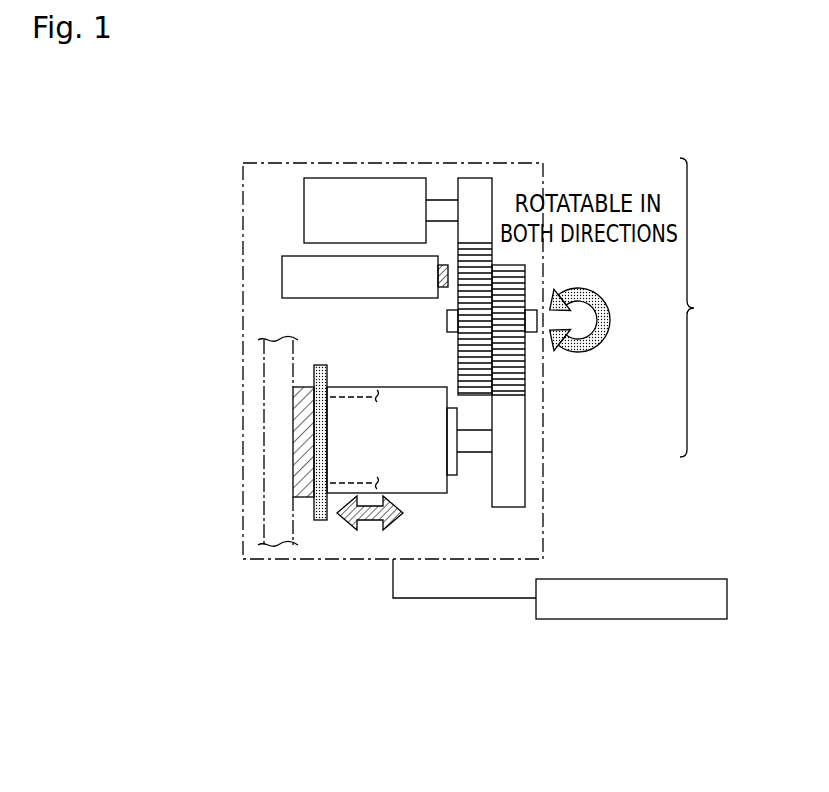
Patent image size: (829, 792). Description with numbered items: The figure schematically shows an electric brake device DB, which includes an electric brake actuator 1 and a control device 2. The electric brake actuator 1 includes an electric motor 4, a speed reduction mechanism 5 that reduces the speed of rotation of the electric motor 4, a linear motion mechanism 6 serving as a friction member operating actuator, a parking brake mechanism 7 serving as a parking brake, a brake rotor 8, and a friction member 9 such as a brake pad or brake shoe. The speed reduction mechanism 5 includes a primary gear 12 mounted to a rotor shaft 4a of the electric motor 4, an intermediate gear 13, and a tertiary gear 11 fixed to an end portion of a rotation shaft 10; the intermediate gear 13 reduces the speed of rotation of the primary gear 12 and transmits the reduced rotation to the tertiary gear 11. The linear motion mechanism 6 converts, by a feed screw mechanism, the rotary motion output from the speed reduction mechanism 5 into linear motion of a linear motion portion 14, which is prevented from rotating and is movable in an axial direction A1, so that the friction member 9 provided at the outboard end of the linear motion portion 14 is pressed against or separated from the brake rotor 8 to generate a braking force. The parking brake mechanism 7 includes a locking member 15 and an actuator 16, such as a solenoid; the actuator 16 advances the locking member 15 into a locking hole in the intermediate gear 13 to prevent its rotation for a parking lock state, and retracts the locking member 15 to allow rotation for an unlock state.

The electric brake actuator 1 is at (242, 223).
The control device 2 is at (615, 579).
The electric motor 4 is at (363, 180).
The rotor shaft 4a is at (441, 208).
The speed reduction mechanism 5 is at (696, 307).
The linear motion mechanism 6 is at (420, 487).
The parking brake mechanism 7 is at (365, 321).
The brake rotor 8 is at (273, 360).
The friction member 9 is at (300, 492).
The rotation shaft 10 is at (468, 445).
The tertiary gear 11 is at (520, 435).
The primary gear 12 is at (483, 186).
The intermediate gear 13 is at (533, 361).
The linear motion portion 14 is at (300, 404).
The locking member 15 is at (440, 290).
The actuator 16 is at (358, 299).
The electric brake device DB is at (190, 243).
The axial direction A1 is at (403, 513).